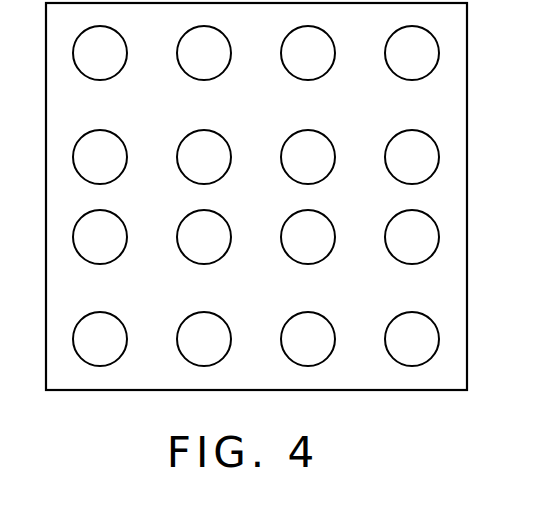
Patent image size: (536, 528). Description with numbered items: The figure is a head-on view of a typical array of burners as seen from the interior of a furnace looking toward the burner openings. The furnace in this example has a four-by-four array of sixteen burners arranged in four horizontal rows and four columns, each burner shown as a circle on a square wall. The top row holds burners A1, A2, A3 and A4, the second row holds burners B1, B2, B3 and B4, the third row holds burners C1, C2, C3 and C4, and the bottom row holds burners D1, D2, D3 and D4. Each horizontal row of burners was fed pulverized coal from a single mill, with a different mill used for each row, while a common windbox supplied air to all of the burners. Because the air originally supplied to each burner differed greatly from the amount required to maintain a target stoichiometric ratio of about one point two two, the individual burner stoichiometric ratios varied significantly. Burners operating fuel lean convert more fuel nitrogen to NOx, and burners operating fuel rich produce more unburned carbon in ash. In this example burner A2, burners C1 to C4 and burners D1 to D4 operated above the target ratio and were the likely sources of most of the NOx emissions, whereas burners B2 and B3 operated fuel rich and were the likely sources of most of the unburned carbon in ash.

The burner A1 is at (100, 53).
The burner A2 is at (204, 53).
The burner A3 is at (308, 53).
The burner A4 is at (412, 53).
The burner B1 is at (100, 157).
The burner B2 is at (204, 157).
The burner B3 is at (308, 157).
The burner B4 is at (412, 157).
The burner C1 is at (100, 237).
The burner C2 is at (204, 237).
The burner C3 is at (308, 237).
The burner C4 is at (412, 237).
The burner D1 is at (100, 339).
The burner D2 is at (204, 339).
The burner D3 is at (308, 339).
The burner D4 is at (412, 339).